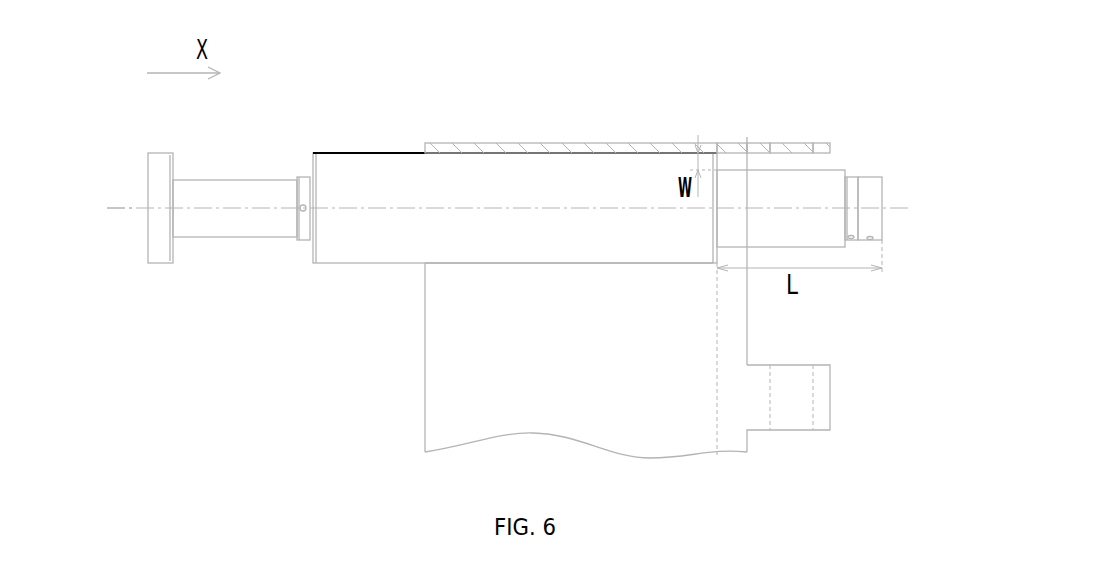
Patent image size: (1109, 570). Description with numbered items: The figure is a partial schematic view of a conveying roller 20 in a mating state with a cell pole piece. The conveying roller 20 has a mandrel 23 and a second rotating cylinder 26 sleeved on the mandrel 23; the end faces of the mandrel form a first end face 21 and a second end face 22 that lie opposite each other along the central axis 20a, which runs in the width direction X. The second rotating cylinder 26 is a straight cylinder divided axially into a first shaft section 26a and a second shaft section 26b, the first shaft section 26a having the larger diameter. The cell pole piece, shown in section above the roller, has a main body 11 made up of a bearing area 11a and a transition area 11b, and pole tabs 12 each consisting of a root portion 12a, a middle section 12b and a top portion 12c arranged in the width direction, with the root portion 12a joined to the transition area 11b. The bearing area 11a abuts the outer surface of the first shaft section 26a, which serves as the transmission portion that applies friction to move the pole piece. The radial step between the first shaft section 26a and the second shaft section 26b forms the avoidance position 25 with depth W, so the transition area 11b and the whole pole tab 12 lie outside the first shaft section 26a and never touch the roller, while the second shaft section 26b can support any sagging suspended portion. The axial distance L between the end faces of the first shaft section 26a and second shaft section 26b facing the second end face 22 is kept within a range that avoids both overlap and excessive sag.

The main body 11 is at (610, 67).
The bearing area 11a is at (622, 143).
The transition area 11b is at (735, 143).
The pole tab 12 is at (733, 67).
The root portion 12a is at (750, 143).
The middle section 12b is at (788, 143).
The top portion 12c is at (825, 143).
The conveying roller 20 is at (317, 128).
The central axis 20a is at (117, 208).
The first end face 21 is at (148, 175).
The second end face 22 is at (882, 222).
The mandrel 23 is at (247, 228).
The avoidance position 25 is at (768, 163).
The second rotating cylinder 26 is at (835, 344).
The first shaft section 26a is at (643, 248).
The second shaft section 26b is at (800, 230).